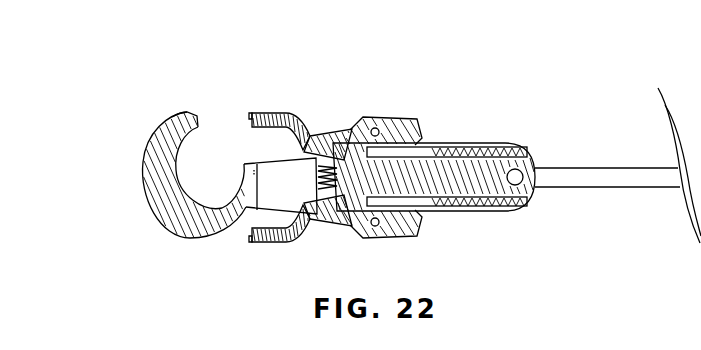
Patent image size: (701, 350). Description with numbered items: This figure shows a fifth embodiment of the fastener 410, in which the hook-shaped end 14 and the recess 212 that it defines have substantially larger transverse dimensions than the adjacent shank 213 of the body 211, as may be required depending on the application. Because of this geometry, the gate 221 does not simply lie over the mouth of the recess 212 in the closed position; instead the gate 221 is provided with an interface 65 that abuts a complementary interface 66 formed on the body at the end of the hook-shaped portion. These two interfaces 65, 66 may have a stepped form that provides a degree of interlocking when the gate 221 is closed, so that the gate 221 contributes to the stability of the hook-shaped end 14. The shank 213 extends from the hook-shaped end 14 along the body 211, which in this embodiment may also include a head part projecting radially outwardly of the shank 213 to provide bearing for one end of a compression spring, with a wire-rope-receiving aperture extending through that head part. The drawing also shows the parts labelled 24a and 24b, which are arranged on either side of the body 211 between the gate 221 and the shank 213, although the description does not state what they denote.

The hook-shaped end 14 is at (133, 211).
The fastener 410 is at (148, 256).
The complementary interface 66 is at (183, 114).
The recess 212 is at (201, 176).
The interface 65 is at (258, 112).
The gate 221 is at (300, 112).
The upper clamp body 24a is at (355, 124).
The lower clamp body 24b is at (362, 230).
The body 211 is at (466, 216).
The shank 213 is at (470, 148).